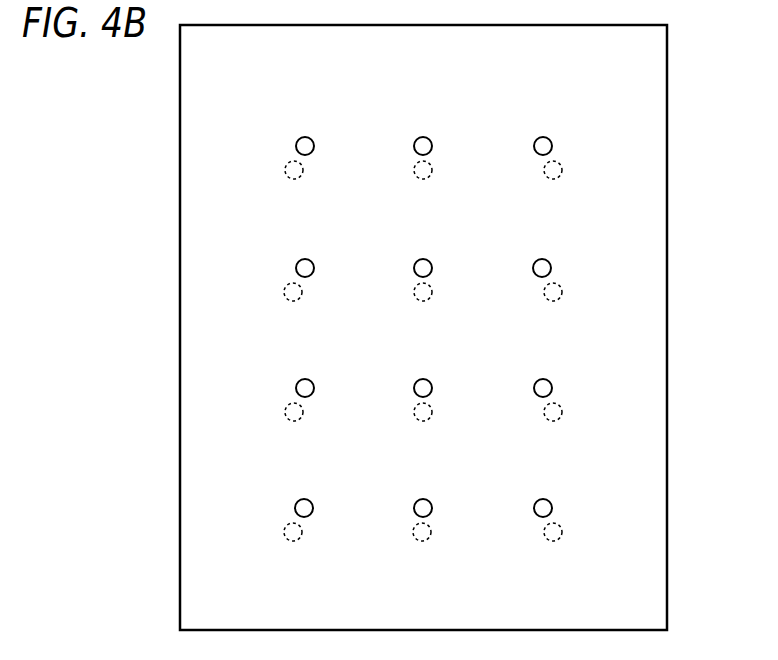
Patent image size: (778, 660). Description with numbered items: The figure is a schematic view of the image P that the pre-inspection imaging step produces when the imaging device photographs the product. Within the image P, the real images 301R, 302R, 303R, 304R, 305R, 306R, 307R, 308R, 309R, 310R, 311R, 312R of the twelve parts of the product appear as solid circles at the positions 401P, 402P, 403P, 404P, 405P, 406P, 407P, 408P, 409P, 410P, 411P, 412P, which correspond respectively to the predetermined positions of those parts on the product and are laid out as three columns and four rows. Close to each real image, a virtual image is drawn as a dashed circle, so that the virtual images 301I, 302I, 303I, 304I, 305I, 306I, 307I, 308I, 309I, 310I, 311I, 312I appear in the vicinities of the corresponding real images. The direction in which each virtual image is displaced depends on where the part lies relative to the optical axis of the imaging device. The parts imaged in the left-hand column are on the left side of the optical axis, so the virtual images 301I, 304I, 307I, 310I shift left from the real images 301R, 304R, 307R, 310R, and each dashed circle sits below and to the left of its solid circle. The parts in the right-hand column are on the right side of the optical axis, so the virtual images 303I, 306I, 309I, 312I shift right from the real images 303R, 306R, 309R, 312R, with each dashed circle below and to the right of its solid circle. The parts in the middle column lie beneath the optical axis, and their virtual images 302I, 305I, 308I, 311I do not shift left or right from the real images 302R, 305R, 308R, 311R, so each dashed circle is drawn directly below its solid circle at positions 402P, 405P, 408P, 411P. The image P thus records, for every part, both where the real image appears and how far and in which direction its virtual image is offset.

The image P is at (662, 48).
The position 401P is at (302, 137).
The position 402P is at (427, 137).
The position 403P is at (546, 136).
The position 404P is at (307, 258).
The position 405P is at (427, 259).
The position 406P is at (537, 257).
The position 407P is at (302, 378).
The position 408P is at (427, 378).
The position 409P is at (546, 377).
The position 410P is at (307, 498).
The position 411P is at (426, 498).
The position 412P is at (540, 499).
The real image 301R is at (296, 145).
The real image 302R is at (414, 145).
The real image 303R is at (534, 145).
The real image 304R is at (296, 267).
The real image 305R is at (414, 267).
The real image 306R is at (533, 267).
The real image 307R is at (296, 387).
The real image 308R is at (414, 387).
The real image 309R is at (534, 387).
The real image 310R is at (295, 507).
The real image 311R is at (414, 507).
The real image 312R is at (534, 507).
The virtual image 301I is at (285, 168).
The virtual image 302I is at (414, 169).
The virtual image 303I is at (546, 173).
The virtual image 304I is at (284, 290).
The virtual image 305I is at (414, 291).
The virtual image 306I is at (546, 296).
The virtual image 307I is at (285, 410).
The virtual image 308I is at (414, 411).
The virtual image 309I is at (546, 417).
The virtual image 310I is at (285, 542).
The virtual image 311I is at (411, 541).
The virtual image 312I is at (545, 540).